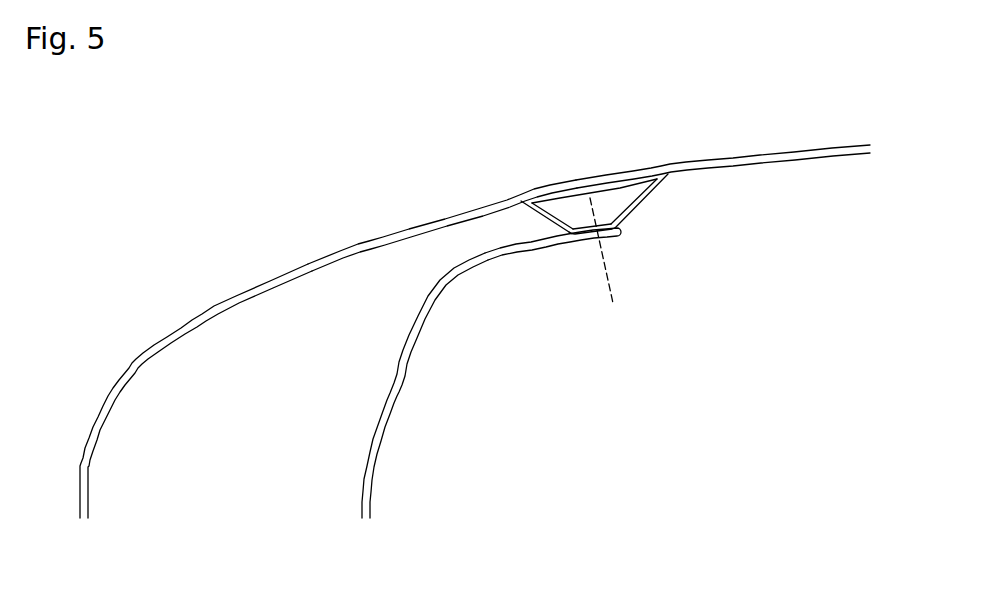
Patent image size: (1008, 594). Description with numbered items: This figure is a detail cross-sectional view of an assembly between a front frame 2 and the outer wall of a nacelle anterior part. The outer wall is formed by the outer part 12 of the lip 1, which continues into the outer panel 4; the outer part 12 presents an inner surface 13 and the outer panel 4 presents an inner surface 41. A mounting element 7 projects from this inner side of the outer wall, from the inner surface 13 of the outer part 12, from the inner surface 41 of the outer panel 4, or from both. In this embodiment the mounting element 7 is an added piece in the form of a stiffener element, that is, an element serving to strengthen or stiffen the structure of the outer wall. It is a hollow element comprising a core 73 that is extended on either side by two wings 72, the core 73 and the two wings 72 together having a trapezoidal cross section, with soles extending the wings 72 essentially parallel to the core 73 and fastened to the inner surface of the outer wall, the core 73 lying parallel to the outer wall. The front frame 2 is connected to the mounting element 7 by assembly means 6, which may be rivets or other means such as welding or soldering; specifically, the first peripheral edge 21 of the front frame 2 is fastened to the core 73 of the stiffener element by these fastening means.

The lip 1 is at (328, 340).
The outer part 12 is at (360, 245).
The inner surface 13 is at (289, 283).
The front frame 2 is at (491, 373).
The first peripheral edge 21 is at (553, 248).
The outer panel 4 is at (723, 146).
The inner surface 41 is at (767, 162).
The assembly means 6 is at (636, 274).
The mounting element 7 is at (592, 194).
The wings 72 is at (548, 219).
The core 73 is at (606, 222).